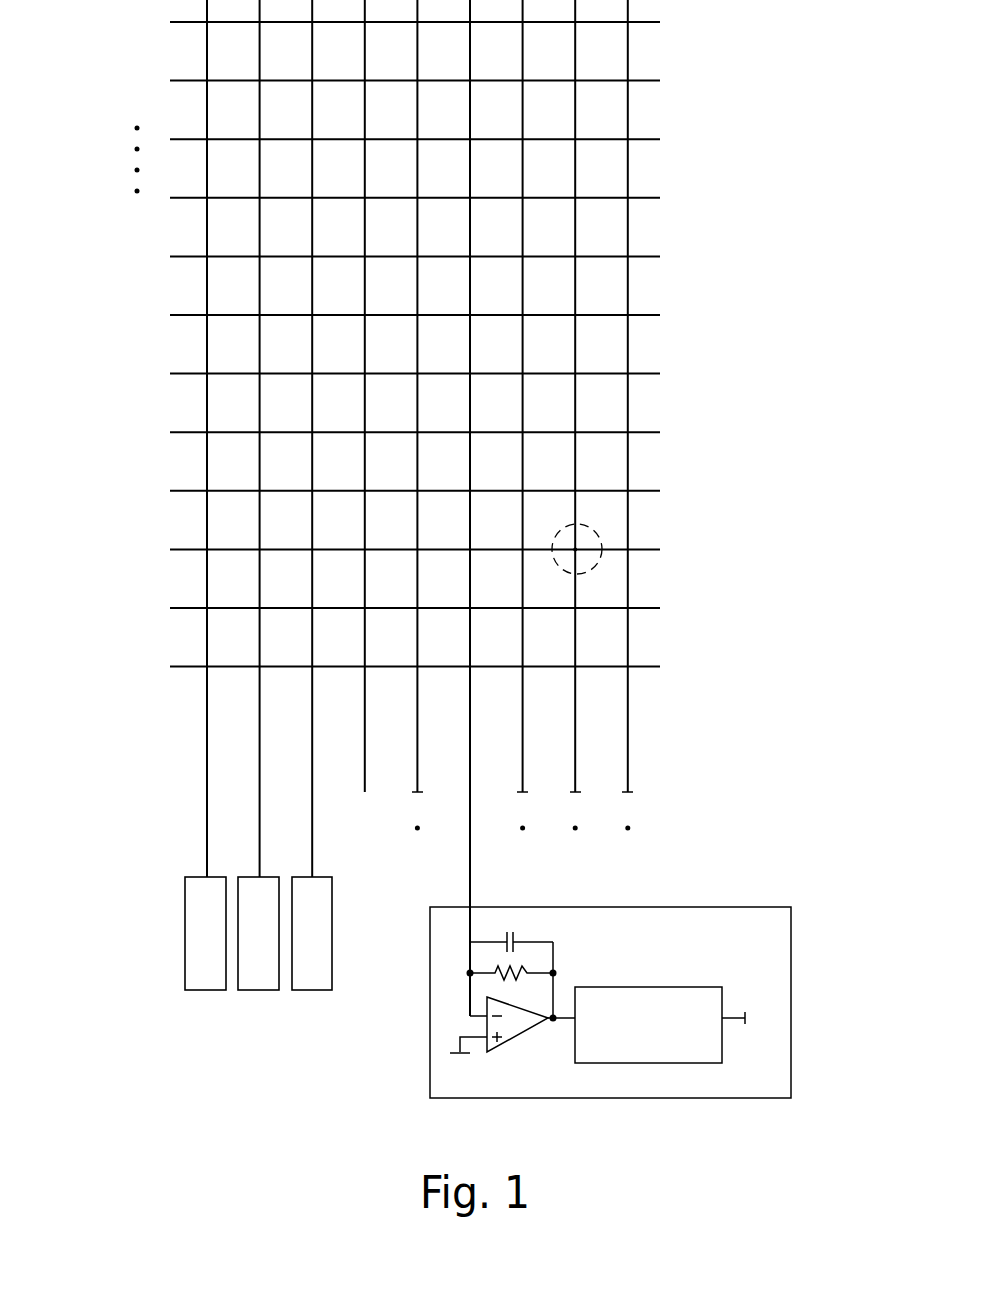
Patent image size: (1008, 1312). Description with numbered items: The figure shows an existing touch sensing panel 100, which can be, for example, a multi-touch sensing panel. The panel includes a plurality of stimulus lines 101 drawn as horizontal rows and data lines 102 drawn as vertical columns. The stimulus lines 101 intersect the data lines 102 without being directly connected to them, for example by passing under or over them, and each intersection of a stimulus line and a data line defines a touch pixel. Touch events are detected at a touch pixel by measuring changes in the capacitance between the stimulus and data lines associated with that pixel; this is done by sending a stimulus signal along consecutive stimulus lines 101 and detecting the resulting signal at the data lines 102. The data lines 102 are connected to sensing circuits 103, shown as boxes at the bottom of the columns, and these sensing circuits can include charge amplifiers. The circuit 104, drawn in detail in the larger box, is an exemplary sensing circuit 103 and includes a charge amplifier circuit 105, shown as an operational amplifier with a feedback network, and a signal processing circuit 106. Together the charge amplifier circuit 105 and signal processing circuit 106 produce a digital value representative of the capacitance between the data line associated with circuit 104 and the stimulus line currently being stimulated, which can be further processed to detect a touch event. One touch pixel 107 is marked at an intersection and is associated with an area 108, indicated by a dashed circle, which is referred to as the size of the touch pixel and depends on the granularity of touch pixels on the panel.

The touch sensing panel 100 is at (427, 508).
The stimulus lines 101 is at (172, 139).
The data lines 102 is at (302, 787).
The sensing circuits 103 is at (210, 990).
The circuit 104 is at (652, 1024).
The charge amplifier circuit 105 is at (516, 1040).
The signal processing circuit 106 is at (625, 1063).
The touch pixel 107 is at (580, 553).
The area 108 is at (596, 533).